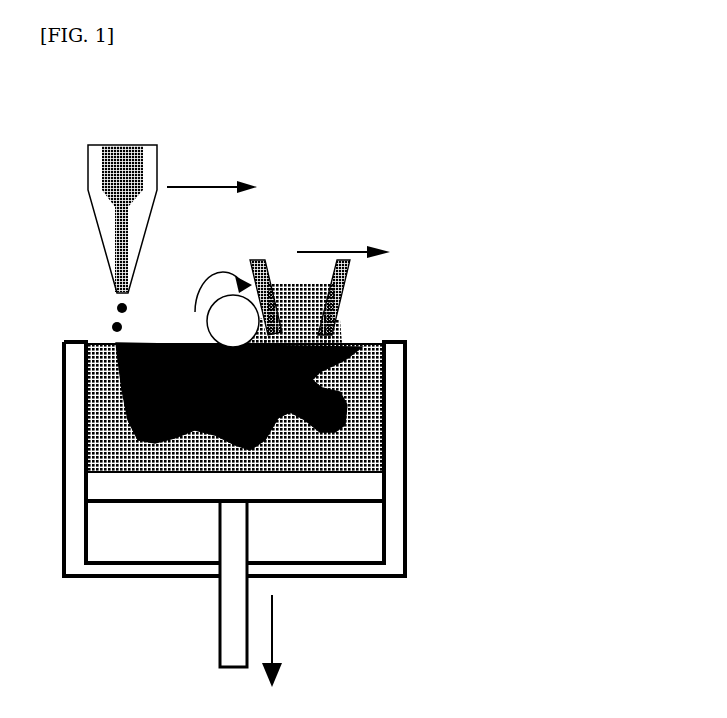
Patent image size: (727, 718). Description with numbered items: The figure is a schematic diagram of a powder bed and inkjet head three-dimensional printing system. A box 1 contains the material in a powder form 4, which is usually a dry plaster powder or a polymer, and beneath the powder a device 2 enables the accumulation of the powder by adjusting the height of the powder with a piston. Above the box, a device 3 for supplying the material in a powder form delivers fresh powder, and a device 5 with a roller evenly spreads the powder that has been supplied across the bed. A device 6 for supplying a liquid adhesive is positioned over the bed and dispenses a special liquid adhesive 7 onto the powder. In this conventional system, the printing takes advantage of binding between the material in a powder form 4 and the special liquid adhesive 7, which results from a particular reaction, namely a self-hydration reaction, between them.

The box 1 is at (393, 523).
The powder accumulation device 2 is at (233, 628).
The powder supplying device 3 is at (337, 297).
The material in a powder form 4 is at (385, 427).
The roller device 5 is at (227, 318).
The liquid adhesive supplying device 6 is at (138, 208).
The special liquid adhesive 7 is at (127, 160).